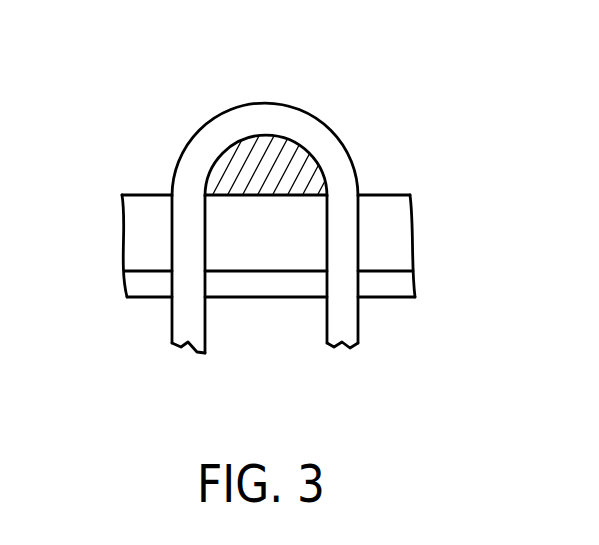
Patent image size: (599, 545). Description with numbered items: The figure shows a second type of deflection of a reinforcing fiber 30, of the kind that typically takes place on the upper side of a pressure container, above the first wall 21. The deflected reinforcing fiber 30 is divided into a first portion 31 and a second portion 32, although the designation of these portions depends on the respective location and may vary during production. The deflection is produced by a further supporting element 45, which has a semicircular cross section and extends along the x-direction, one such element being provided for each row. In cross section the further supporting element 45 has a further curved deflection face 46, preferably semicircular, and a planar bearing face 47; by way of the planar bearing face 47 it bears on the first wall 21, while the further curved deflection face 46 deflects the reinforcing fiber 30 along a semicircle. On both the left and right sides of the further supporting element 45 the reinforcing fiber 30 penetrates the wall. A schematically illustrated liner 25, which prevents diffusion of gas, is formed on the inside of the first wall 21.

The first wall 21 is at (403, 228).
The first portion 31 is at (350, 259).
The liner 25 is at (402, 281).
The reinforcing fiber 30 is at (195, 335).
The second portion 32 is at (192, 256).
The further curved deflection face 46 is at (276, 137).
The planar bearing face 47 is at (283, 176).
The further supporting element 45 is at (282, 158).